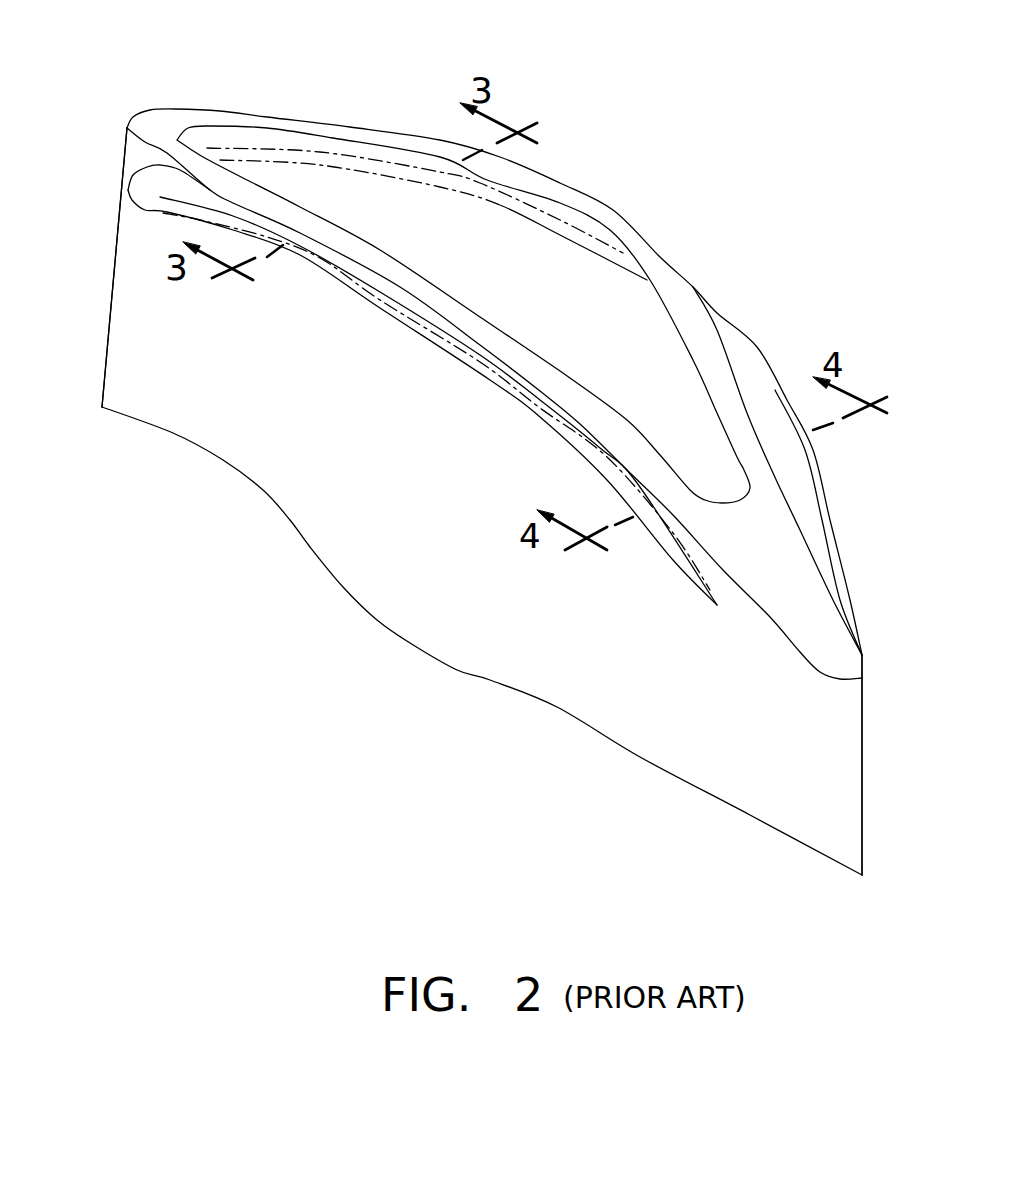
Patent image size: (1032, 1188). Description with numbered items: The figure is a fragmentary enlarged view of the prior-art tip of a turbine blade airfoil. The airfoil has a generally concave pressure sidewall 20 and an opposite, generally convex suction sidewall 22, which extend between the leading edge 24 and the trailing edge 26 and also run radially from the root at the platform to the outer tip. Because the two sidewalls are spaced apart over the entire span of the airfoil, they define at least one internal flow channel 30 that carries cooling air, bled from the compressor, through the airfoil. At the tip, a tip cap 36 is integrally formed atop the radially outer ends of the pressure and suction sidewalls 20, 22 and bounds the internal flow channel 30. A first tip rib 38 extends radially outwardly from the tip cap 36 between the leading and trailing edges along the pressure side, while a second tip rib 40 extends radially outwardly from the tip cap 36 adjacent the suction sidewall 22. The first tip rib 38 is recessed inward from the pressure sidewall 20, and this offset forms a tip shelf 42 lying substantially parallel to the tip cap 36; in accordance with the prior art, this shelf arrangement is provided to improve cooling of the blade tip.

The pressure sidewall 20 is at (430, 488).
The suction sidewall 22 is at (832, 507).
The leading edge 24 is at (107, 338).
The trailing edge 26 is at (860, 750).
The internal flow channel 30 is at (280, 177).
The tip cap 36 is at (499, 261).
The first tip rib 38 is at (457, 311).
The second tip rib 40 is at (533, 180).
The tip shelf 42 is at (330, 278).